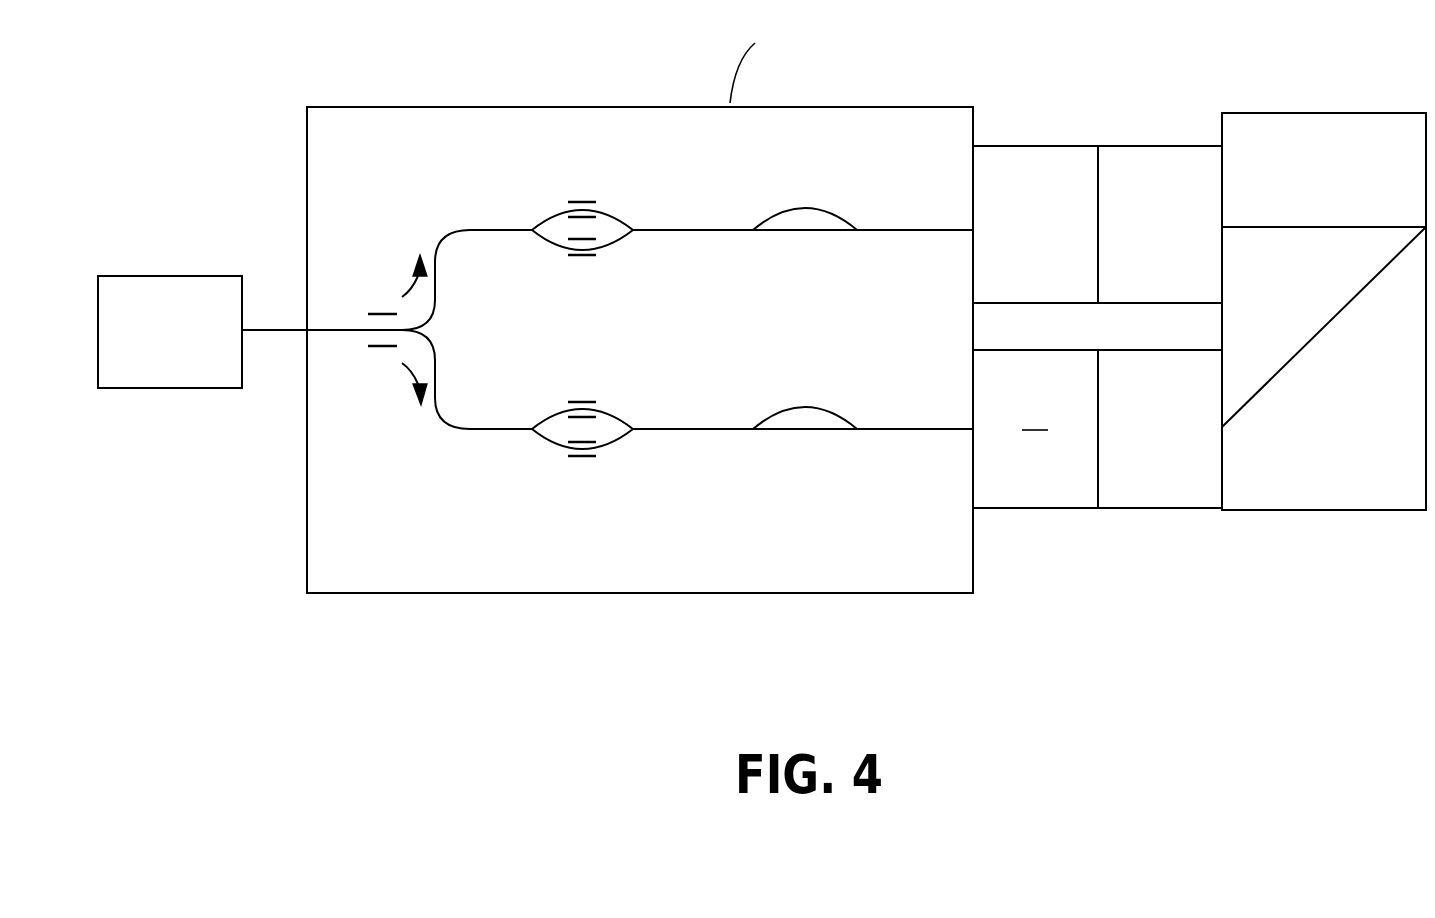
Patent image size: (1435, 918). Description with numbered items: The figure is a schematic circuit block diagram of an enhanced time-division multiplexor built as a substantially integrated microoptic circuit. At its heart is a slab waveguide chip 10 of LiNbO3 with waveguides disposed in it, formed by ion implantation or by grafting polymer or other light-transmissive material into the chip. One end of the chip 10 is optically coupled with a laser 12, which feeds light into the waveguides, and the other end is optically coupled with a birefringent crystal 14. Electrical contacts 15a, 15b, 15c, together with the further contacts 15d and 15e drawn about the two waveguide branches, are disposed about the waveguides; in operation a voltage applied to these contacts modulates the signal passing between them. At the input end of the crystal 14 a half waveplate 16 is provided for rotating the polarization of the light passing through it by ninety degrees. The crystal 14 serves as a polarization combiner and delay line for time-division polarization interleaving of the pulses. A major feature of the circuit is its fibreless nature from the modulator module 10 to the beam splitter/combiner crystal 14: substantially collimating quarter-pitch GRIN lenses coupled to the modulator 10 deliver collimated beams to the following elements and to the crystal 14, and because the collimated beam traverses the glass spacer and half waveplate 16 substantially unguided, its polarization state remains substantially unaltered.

The slab waveguide chip 10 is at (415, 593).
The laser 12 is at (178, 275).
The birefringent crystal 14 is at (1307, 490).
The electrical contact 15a is at (381, 312).
The electrical contact 15b is at (596, 202).
The electrical contact 15c is at (596, 256).
The lower modulator electrode 15d is at (596, 402).
The lower modulator electrode 15e is at (583, 458).
The half waveplate 16 is at (1030, 510).